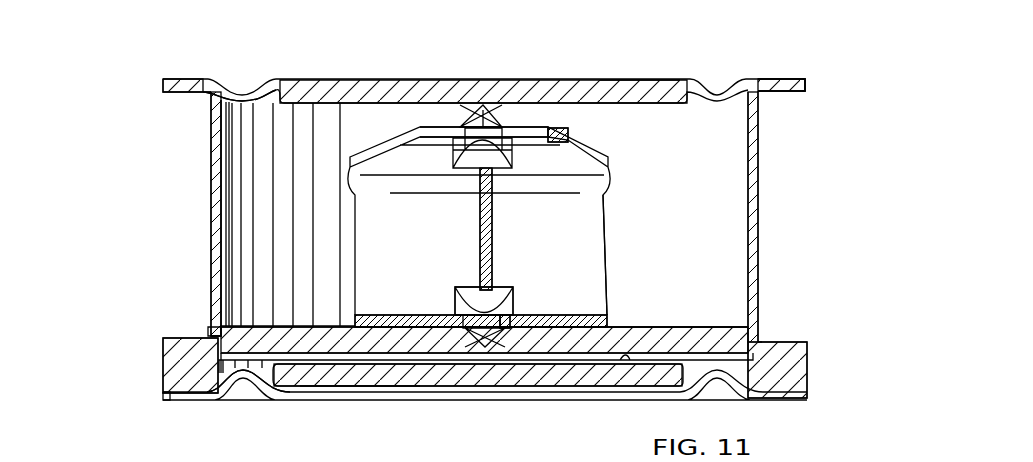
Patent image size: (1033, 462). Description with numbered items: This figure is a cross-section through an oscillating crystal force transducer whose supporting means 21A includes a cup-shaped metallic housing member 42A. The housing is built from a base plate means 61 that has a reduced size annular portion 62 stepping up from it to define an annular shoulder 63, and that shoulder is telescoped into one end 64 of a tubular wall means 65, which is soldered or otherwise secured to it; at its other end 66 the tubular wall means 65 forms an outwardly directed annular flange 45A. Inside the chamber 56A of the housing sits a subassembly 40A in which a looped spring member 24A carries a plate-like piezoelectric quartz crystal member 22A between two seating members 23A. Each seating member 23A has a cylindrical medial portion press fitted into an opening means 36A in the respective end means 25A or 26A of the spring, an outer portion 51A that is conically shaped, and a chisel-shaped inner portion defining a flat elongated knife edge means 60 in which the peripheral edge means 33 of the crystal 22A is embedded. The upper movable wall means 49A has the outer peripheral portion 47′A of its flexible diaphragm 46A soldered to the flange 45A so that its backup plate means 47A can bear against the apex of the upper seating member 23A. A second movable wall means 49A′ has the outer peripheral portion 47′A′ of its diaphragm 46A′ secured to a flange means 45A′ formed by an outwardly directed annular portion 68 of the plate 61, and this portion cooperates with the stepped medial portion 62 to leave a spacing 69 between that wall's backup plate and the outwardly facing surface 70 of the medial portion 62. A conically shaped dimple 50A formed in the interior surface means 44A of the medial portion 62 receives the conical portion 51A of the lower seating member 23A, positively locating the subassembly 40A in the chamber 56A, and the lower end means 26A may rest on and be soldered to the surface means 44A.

The supporting means 21A is at (209, 198).
The piezoelectric quartz crystal member 22A is at (478, 222).
The seating member 23A is at (498, 118).
The looped spring member 24A is at (608, 250).
The end means 25A is at (462, 128).
The end means 26A is at (426, 358).
The lower valve head 33 is at (456, 300).
The opening means 36A is at (478, 118).
The subassembly 40A is at (592, 146).
The cup-shaped metallic housing member 42A is at (212, 232).
The interior surface means 44A is at (263, 328).
The outwardly directed annular flange 45A is at (805, 90).
The annular shoulder means or flange means 45A′ is at (170, 398).
The flexible diaphragm 46A is at (360, 78).
The diaphragm 46A′ is at (285, 386).
The backup plate means 47A is at (605, 80).
The outer peripheral portion 47′A is at (780, 80).
The outer peripheral portion 47′A′ is at (203, 394).
The movable wall means 49A is at (655, 68).
The second movable wall means 49A′ is at (352, 386).
The conically-shaped dimple means or indentation 50A is at (462, 332).
The outer portion 51A is at (552, 128).
The chamber 56A is at (712, 160).
The knife edge means 60 is at (493, 280).
The base plate means 61 is at (790, 376).
The reduced size annular portion 62 is at (735, 335).
The annular shoulder 63 is at (770, 345).
The end 64 is at (206, 322).
The tubular wall means 65 is at (762, 192).
The other end 66 is at (208, 106).
The outwardly directed annular portion 68 is at (168, 362).
The spacing 69 is at (810, 352).
The outwardly facing surface 70 is at (640, 350).